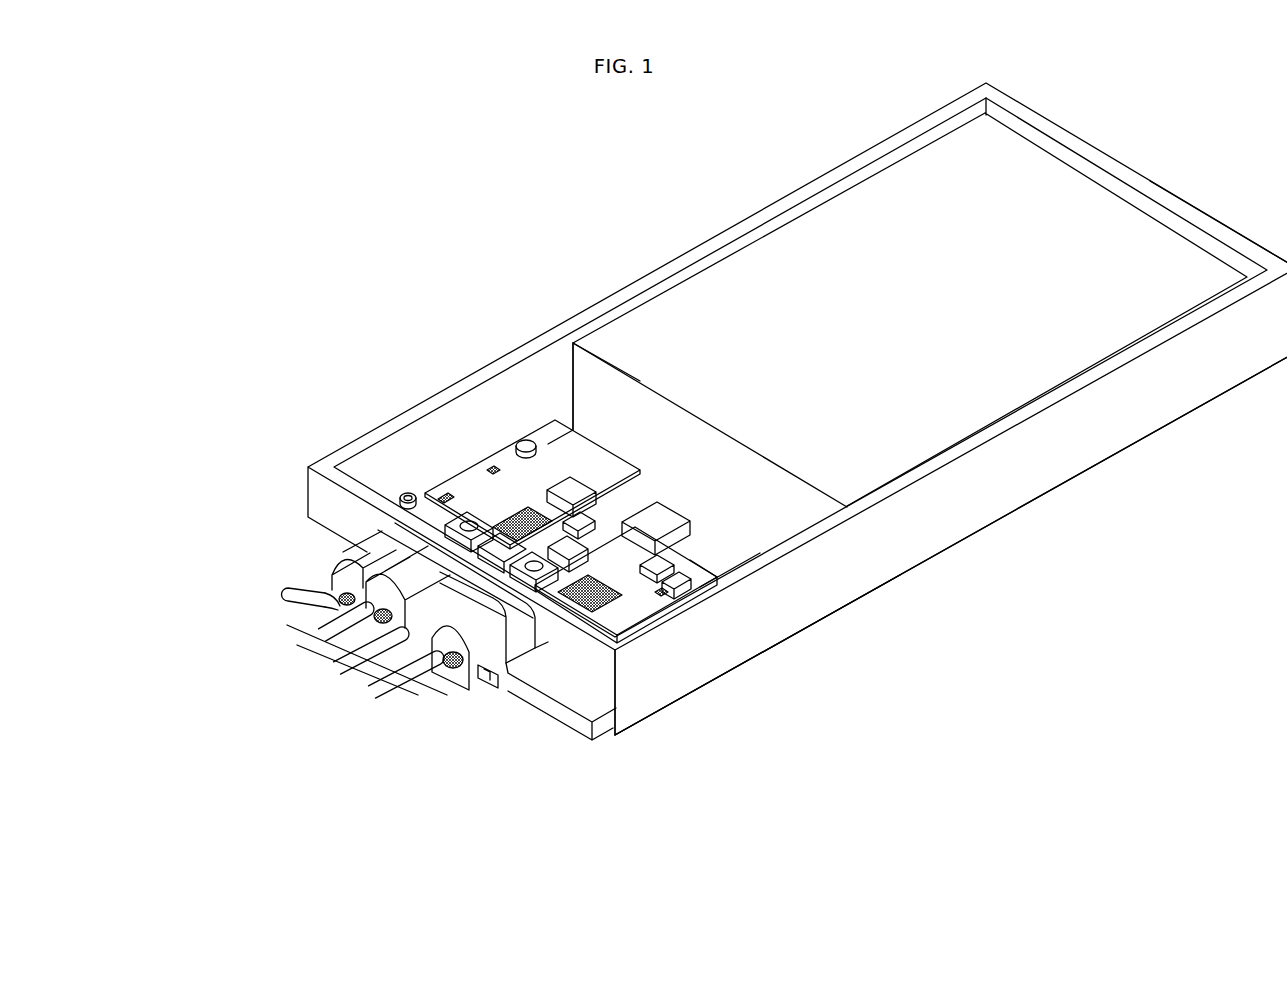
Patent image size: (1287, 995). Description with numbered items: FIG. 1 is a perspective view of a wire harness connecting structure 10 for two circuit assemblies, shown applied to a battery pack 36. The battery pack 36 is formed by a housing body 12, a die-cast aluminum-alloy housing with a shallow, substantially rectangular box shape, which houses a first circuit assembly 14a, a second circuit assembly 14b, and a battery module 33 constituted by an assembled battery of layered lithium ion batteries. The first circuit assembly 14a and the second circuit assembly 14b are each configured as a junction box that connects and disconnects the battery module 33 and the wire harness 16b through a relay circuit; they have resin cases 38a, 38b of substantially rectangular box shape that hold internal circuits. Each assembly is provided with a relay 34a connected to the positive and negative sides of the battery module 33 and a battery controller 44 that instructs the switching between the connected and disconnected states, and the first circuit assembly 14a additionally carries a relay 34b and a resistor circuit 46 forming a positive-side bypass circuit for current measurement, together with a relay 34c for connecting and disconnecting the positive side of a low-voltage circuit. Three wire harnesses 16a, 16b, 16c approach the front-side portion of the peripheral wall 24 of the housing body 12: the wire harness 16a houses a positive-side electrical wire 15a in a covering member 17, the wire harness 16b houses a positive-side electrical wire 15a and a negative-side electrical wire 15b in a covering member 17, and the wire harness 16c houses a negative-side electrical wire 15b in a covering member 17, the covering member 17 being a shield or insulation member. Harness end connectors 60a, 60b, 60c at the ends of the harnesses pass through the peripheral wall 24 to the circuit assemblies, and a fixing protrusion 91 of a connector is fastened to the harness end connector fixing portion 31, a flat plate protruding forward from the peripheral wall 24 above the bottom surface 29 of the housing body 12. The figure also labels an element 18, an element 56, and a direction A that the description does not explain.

The wire harness connecting structure 10 is at (398, 378).
The housing body 12 is at (522, 332).
The first circuit assembly 14a is at (710, 535).
The second circuit assembly 14b is at (574, 448).
The positive-side electrical wire 15a is at (368, 675).
The negative-side electrical wire 15b is at (282, 607).
The wire harness 16a is at (390, 703).
The wire harness 16b is at (320, 665).
The wire harness 16c is at (273, 628).
The covering member 17 is at (437, 670).
The partition wall 18 is at (552, 440).
The peripheral wall 24 is at (953, 500).
The bottom surface 29 is at (700, 690).
The harness end connector fixing portion 31 is at (500, 672).
The battery module 33 is at (760, 294).
The relay 34a is at (582, 488).
The relay 34b is at (568, 553).
The relay 34c is at (583, 528).
The battery pack 36 is at (1088, 498).
The resin case 38a is at (703, 571).
The resin case 38b is at (508, 462).
The battery controller 44 is at (484, 500).
The resistor circuit 46 is at (676, 565).
The screw hole 56 is at (527, 440).
The harness end connector 60a is at (483, 712).
The harness end connector 60b is at (347, 579).
The harness end connector 60c is at (322, 540).
The fixing protrusion 91 is at (487, 688).
The viewing direction A is at (292, 695).